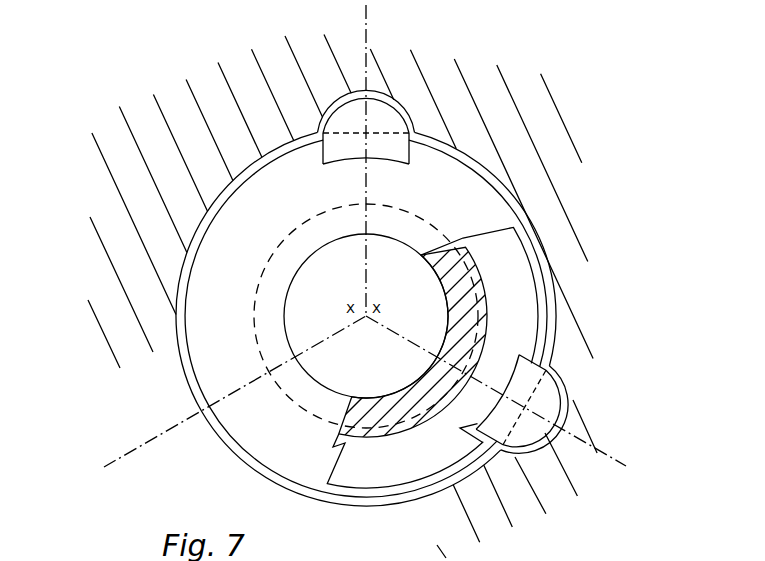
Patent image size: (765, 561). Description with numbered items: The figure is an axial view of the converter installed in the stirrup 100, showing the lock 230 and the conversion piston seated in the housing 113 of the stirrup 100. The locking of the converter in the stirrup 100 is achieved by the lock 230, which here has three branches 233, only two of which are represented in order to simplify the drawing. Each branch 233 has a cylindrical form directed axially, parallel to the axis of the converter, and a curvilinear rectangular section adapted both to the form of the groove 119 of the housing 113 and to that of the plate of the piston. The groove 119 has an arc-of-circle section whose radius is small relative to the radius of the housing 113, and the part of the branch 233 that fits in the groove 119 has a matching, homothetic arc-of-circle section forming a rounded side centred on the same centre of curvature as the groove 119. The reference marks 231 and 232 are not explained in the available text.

The stirrup 100 is at (163, 160).
The housing 113 is at (245, 155).
The groove 119 is at (402, 96).
The lock 230 is at (429, 260).
The insert member 231 is at (388, 250).
The inner ring 232 is at (435, 178).
The branch 233 is at (385, 125).